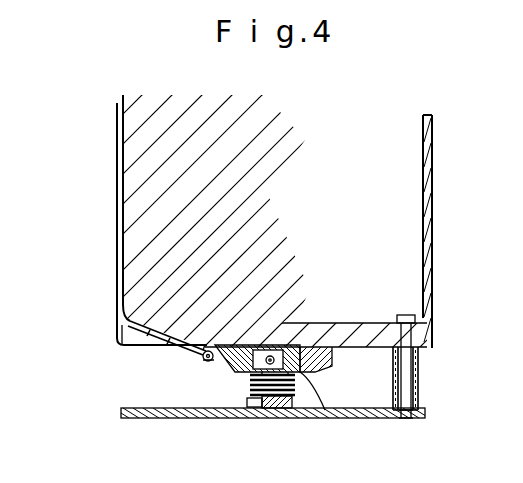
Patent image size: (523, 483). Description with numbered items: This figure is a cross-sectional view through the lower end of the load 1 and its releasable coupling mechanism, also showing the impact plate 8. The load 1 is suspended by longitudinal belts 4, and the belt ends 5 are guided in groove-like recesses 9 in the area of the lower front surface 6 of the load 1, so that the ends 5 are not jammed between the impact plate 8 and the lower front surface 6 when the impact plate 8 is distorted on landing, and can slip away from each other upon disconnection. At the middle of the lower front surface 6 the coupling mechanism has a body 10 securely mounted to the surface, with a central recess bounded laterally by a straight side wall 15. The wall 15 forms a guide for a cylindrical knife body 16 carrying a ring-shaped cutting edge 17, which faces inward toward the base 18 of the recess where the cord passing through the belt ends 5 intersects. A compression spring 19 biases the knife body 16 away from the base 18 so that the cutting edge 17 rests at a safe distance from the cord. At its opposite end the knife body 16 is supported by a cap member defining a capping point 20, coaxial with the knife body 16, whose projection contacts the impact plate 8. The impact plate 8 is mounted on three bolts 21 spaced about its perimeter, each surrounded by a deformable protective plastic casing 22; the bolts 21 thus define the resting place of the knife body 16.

The load 1 is at (148, 207).
The longitudinal belt 4 is at (117, 175).
The belt end 5 is at (182, 347).
The lower front surface 6 is at (138, 347).
The impact plate 8 is at (133, 419).
The groove-like recess 9 is at (145, 337).
The body 10 is at (332, 360).
The straight side wall 15 is at (333, 320).
The knife body 16 is at (298, 400).
The ring-shaped cutting edge 17 is at (297, 387).
The base of the recess 18 is at (283, 310).
The compression spring 19 is at (245, 398).
The capping point 20 is at (274, 408).
The bolt 21 is at (413, 372).
The protective plastic casing 22 is at (418, 388).